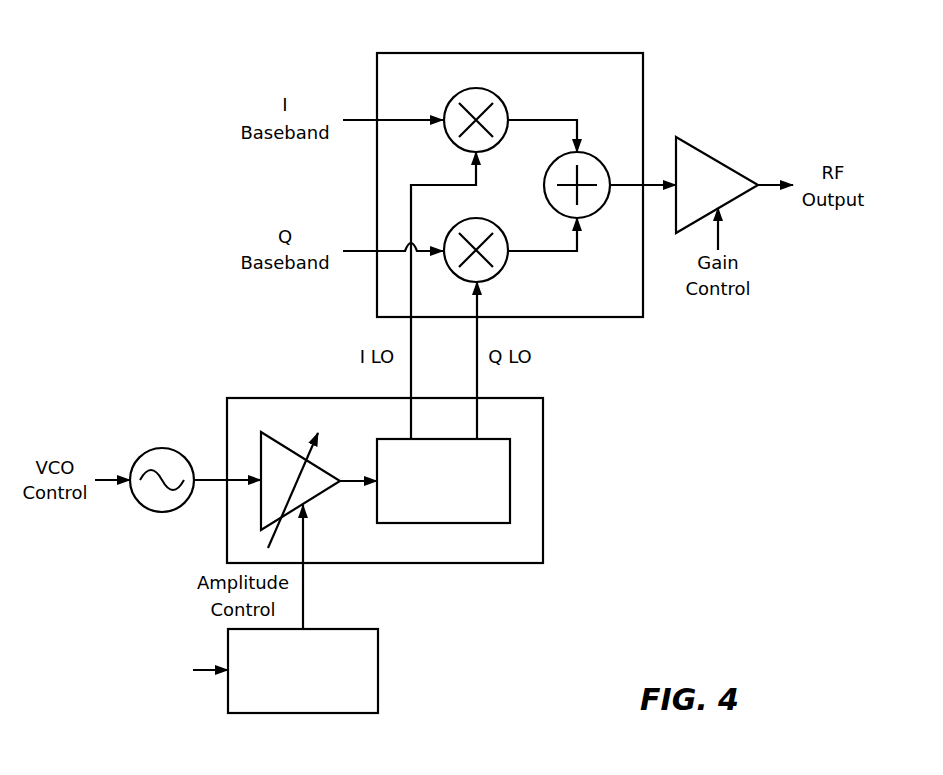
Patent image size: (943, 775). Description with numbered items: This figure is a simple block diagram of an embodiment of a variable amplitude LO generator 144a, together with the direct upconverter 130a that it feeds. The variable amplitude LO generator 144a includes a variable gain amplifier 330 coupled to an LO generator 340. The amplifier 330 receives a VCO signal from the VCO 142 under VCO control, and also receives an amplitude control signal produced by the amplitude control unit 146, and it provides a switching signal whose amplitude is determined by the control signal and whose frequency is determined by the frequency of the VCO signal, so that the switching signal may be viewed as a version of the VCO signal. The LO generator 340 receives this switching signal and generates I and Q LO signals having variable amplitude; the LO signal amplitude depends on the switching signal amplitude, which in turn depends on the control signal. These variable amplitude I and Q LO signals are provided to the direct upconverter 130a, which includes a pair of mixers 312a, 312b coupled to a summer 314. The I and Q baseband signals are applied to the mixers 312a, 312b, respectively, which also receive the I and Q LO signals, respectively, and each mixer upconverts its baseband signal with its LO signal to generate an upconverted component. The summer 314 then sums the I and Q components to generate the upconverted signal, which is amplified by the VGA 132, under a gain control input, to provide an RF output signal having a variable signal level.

The direct upconverter 130a is at (506, 53).
The mixer 312a is at (505, 107).
The mixer 312b is at (502, 272).
The summer 314 is at (544, 192).
The VGA 132 is at (717, 159).
The VCO 142 is at (160, 447).
The variable amplitude LO generator 144a is at (272, 398).
The variable gain amplifier 330 is at (282, 442).
The LO generator 340 is at (433, 439).
The amplitude control unit 146 is at (338, 629).